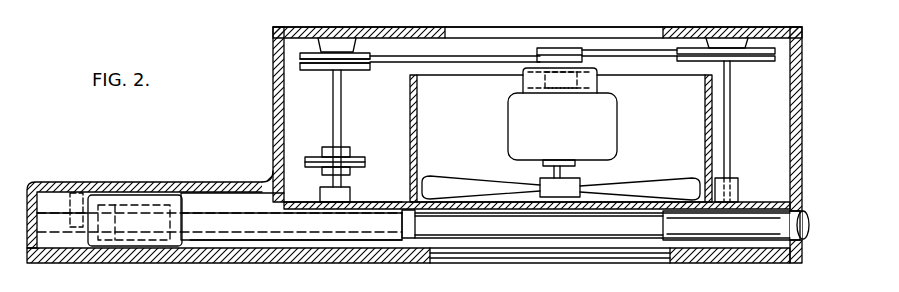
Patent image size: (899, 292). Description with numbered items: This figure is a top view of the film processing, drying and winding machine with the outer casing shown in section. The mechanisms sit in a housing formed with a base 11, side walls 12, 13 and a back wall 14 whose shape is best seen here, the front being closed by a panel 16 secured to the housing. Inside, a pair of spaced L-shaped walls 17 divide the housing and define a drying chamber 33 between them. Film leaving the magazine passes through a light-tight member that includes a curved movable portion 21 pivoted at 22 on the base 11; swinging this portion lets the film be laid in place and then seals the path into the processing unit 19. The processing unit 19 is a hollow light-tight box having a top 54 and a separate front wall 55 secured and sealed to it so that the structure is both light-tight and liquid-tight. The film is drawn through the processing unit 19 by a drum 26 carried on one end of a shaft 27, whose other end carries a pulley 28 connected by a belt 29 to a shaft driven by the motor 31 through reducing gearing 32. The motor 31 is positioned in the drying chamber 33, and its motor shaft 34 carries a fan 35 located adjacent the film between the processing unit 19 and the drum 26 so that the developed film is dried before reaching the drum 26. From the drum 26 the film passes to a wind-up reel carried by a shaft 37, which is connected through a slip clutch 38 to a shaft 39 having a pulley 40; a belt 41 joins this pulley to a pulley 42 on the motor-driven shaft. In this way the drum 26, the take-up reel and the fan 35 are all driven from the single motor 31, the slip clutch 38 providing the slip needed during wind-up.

The base 11 is at (200, 0).
The side wall 12 is at (24, 182).
The side wall 13 is at (795, 136).
The back wall 14 is at (537, 14).
The panel 16 is at (279, 262).
The L-shaped walls 17 is at (411, 121).
The processing unit 19 is at (229, 193).
The movable portion 21 is at (107, 247).
The pivot 22 is at (72, 227).
The drum 26 is at (668, 239).
The shaft 27 is at (731, 109).
The pulley 28 is at (757, 48).
The belt 29 is at (629, 65).
The motor 31 is at (562, 135).
The reducing gearing 32 is at (540, 78).
The drying chamber 33 is at (561, 161).
The motor shaft 34 is at (566, 181).
The fan 35 is at (650, 181).
The shaft 37 is at (345, 181).
The slip clutch 38 is at (366, 159).
The shaft 39 is at (333, 121).
The pulley 40 is at (370, 70).
The belt 41 is at (428, 61).
The pulley 42 is at (540, 57).
The top 54 is at (200, 220).
The front wall 55 is at (312, 241).